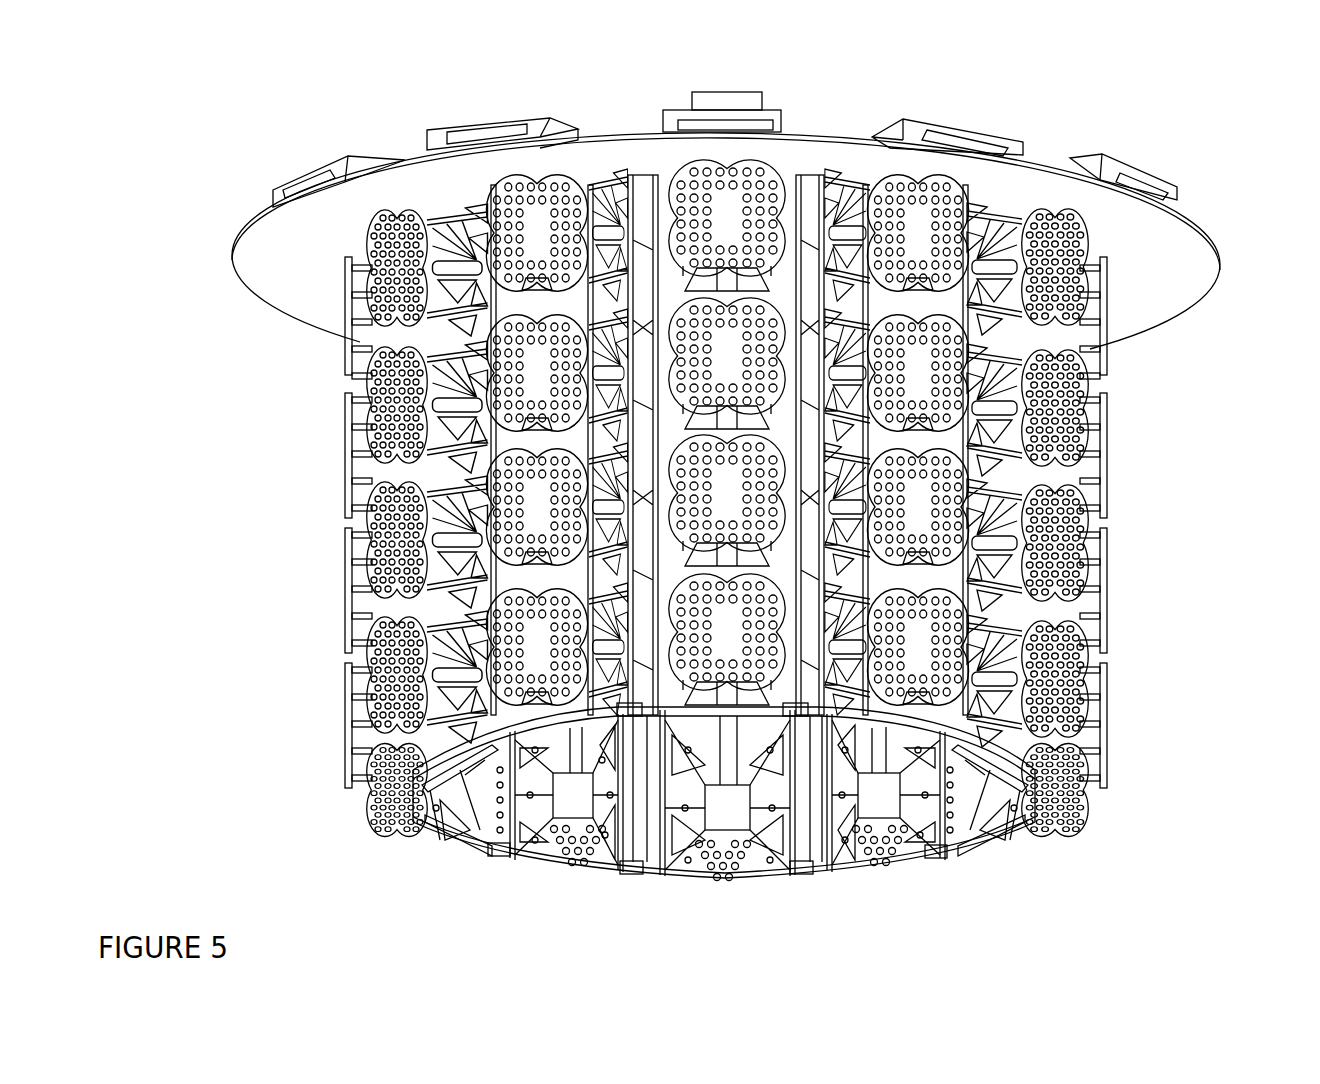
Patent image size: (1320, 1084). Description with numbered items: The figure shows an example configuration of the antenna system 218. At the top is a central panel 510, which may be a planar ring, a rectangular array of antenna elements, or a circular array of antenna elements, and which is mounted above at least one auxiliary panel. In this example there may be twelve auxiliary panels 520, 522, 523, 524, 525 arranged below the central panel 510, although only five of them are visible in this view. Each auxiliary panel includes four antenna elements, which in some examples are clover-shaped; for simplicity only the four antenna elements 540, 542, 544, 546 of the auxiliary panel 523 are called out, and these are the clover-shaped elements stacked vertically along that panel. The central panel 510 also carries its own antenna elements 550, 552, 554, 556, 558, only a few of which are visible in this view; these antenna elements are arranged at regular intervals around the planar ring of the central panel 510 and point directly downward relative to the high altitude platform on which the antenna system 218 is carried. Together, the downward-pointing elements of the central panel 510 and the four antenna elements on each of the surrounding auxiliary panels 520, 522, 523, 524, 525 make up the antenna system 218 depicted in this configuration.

The antenna system 218 is at (278, 75).
The central panel 510 is at (1222, 268).
The auxiliary panel 520 is at (1037, 830).
The auxiliary panel 522 is at (886, 850).
The auxiliary panel 523 is at (730, 710).
The auxiliary panel 524 is at (570, 862).
The auxiliary panel 525 is at (450, 838).
The antenna element 540 is at (730, 210).
The antenna element 542 is at (722, 350).
The antenna element 544 is at (722, 490).
The antenna element 546 is at (722, 630).
The antenna element 550 is at (1139, 173).
The antenna element 552 is at (965, 128).
The antenna element 554 is at (674, 110).
The antenna element 556 is at (490, 129).
The antenna element 558 is at (312, 174).